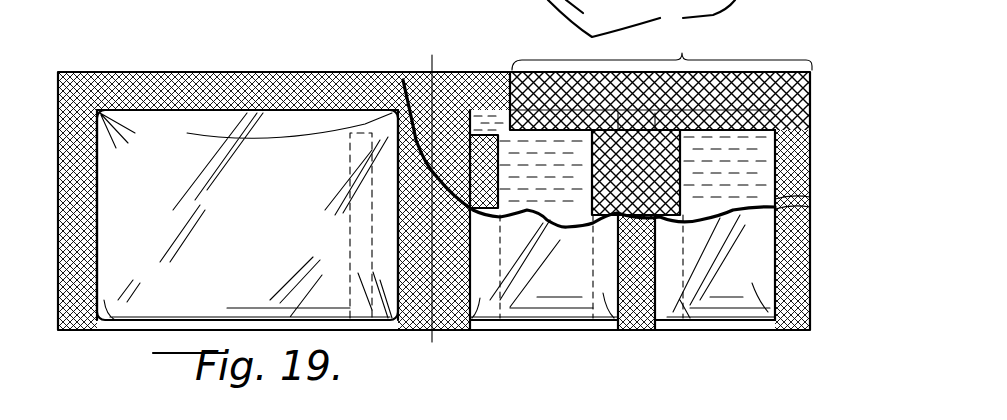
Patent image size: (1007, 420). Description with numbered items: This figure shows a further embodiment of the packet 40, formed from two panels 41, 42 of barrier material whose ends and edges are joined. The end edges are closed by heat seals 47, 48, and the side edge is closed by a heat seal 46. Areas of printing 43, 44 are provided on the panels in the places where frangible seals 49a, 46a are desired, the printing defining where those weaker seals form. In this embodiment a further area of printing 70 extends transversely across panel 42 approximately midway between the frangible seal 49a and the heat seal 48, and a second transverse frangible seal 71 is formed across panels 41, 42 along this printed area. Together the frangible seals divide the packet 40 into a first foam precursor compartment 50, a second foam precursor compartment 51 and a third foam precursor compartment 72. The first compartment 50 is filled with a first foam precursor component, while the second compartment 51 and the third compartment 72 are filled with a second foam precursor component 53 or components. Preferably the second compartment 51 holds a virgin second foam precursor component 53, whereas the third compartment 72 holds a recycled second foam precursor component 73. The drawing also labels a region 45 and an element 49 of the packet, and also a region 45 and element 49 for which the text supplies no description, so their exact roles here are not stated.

The packet 40 is at (474, 197).
The panel 41 is at (193, 293).
The panel 42 is at (760, 187).
The area of printing 43 is at (483, 137).
The area of printing 44 is at (740, 87).
The right chamber 45 is at (530, 330).
The heat seal 46 is at (360, 82).
The frangible seal 46a is at (662, 46).
The heat seal 47 is at (78, 303).
The heat seal 48 is at (797, 273).
The partition wall 49 is at (450, 303).
The frangible seal 49a is at (338, 233).
The first foam precursor compartment 50 is at (170, 127).
The second foam precursor compartment 51 is at (556, 207).
The second foam precursor component 53 is at (528, 200).
The area of printing 70 is at (593, 147).
The second transverse frangible seal 71 is at (645, 310).
The third foam precursor compartment 72 is at (727, 167).
The recycled second foam precursor component 73 is at (700, 214).